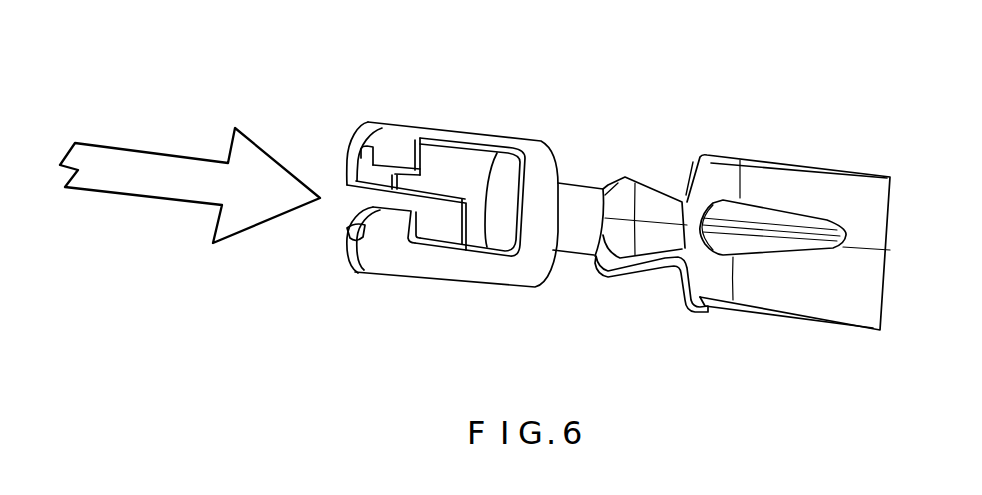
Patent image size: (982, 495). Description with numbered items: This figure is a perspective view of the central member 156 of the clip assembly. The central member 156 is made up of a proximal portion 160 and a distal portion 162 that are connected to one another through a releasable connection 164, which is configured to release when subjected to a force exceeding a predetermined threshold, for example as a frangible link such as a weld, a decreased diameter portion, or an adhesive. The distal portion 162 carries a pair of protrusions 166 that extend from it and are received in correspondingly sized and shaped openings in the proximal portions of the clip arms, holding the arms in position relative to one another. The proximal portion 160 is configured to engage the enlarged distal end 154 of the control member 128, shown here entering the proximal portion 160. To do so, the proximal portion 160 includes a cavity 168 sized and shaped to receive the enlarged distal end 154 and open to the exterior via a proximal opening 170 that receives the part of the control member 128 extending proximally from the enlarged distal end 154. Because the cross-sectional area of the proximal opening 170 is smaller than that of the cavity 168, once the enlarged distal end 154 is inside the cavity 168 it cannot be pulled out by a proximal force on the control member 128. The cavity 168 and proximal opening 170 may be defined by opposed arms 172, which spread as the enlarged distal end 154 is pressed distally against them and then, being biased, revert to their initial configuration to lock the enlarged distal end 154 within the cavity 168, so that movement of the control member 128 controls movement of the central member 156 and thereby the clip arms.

The control member 128 is at (123, 150).
The enlarged distal end 154 is at (190, 142).
The central member 156 is at (589, 118).
The proximal portion 160 is at (399, 195).
The distal portion 162 is at (788, 186).
The releasable connection 164 is at (599, 270).
The protrusions 166 is at (762, 212).
The cavity 168 is at (437, 168).
The proximal opening 170 is at (345, 232).
The opposed arms 172 is at (460, 248).